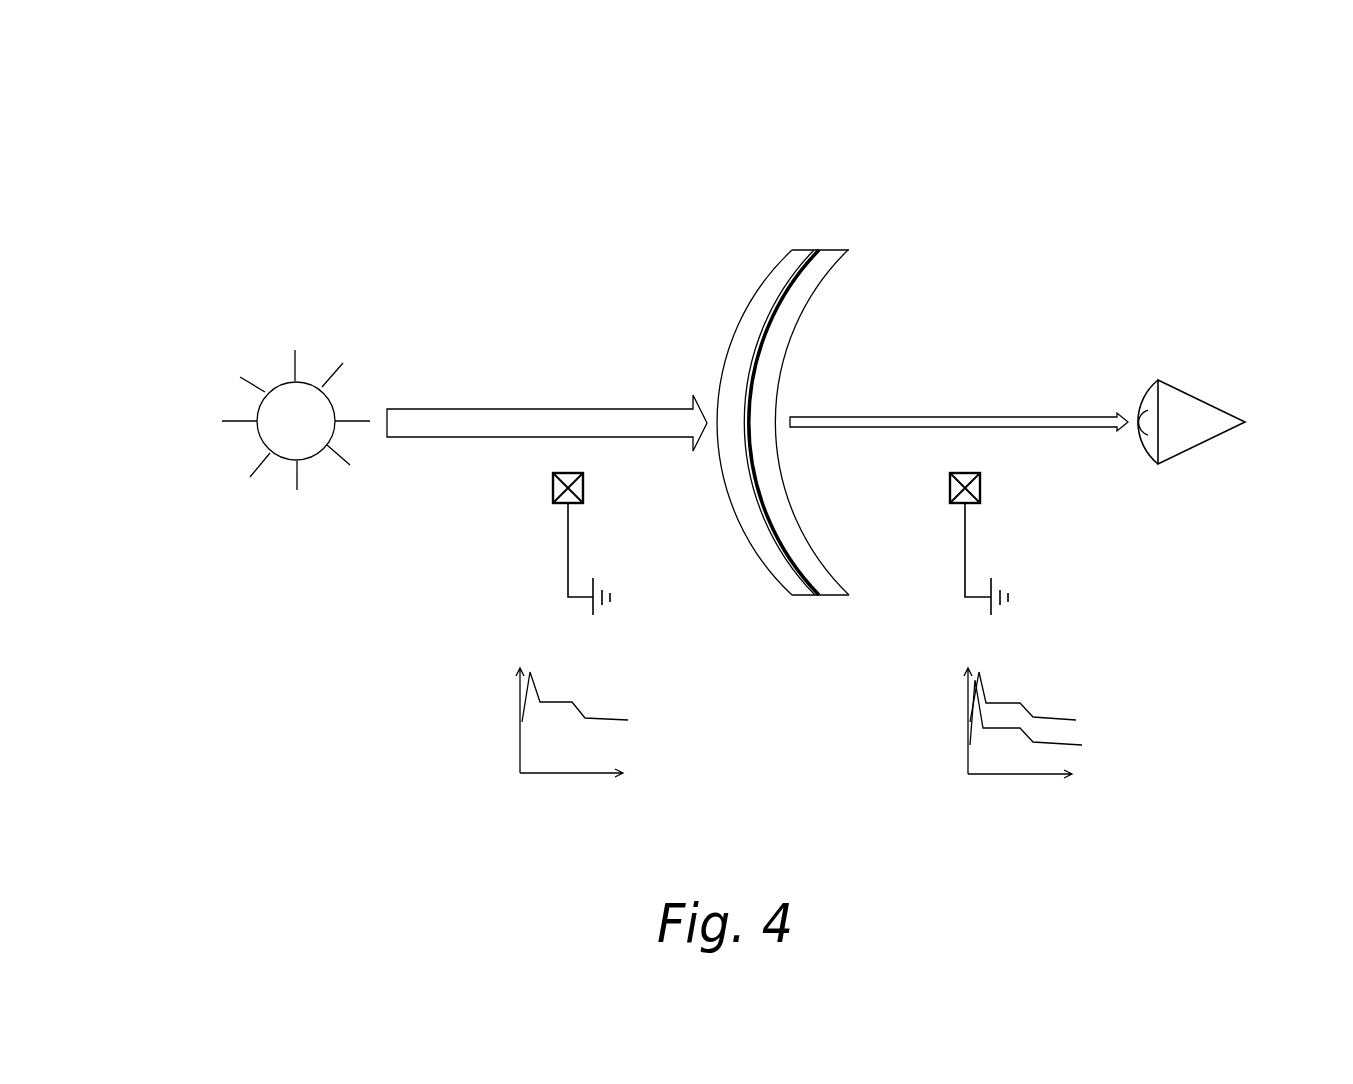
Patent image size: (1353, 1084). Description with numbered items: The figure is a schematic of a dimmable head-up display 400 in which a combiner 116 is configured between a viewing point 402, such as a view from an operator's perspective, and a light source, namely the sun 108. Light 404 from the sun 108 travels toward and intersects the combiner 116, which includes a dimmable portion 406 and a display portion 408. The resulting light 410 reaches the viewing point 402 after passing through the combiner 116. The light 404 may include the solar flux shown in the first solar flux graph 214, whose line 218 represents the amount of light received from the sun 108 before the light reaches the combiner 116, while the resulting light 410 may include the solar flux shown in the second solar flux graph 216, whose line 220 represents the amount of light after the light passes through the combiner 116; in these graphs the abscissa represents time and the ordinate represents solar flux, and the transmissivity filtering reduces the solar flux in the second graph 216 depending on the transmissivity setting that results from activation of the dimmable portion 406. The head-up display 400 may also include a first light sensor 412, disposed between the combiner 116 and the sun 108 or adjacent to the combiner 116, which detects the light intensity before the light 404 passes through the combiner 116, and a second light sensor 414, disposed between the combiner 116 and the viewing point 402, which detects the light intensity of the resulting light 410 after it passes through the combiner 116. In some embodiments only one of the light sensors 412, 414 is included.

The dimmable head-up display 400 is at (205, 110).
The sun 108 is at (283, 385).
The light 404 is at (490, 409).
The combiner 116 is at (737, 380).
The dimmable portion 406 is at (802, 249).
The display portion 408 is at (838, 249).
The resulting light 410 is at (992, 417).
The viewing point 402 is at (1200, 397).
The first light sensor 412 is at (550, 490).
The second light sensor 414 is at (983, 490).
The first solar flux graph 214 is at (503, 816).
The second solar flux graph 216 is at (1091, 755).
The line 218 is at (1050, 716).
The line 220 is at (1062, 744).